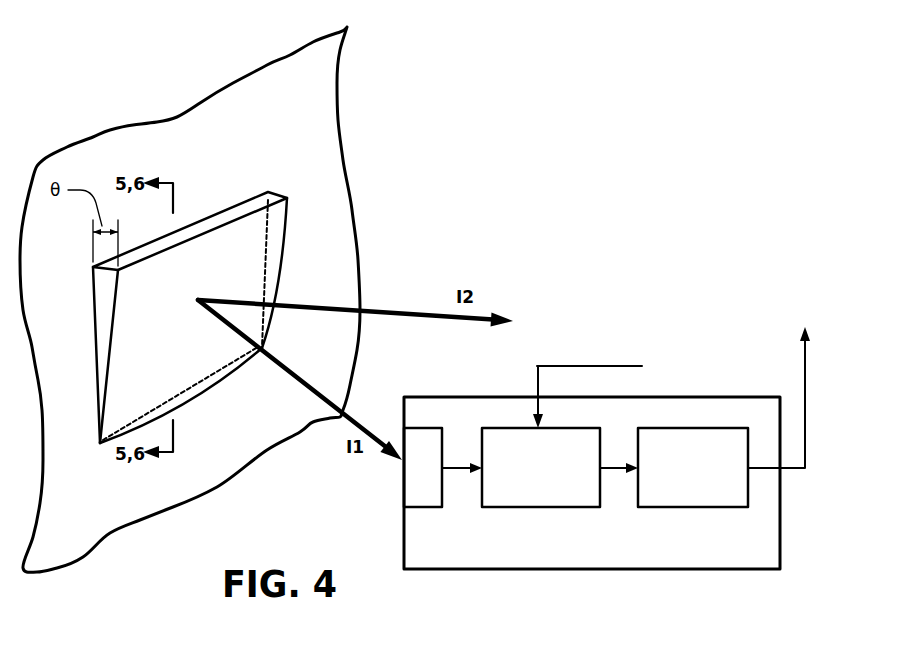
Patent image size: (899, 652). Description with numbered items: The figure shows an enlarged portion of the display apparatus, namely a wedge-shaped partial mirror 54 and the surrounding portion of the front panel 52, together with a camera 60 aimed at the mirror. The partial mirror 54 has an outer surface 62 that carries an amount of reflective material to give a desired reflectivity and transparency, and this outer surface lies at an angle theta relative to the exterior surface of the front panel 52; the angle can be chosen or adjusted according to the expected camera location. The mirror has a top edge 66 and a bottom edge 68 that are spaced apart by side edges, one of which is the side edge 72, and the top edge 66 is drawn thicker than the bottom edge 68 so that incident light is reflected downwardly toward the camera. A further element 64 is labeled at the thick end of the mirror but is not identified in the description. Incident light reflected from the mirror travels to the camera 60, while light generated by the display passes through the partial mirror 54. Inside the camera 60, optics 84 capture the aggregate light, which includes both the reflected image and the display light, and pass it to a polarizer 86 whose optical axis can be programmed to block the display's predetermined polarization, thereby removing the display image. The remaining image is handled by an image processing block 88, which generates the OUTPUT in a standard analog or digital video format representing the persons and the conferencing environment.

The front panel 52 is at (298, 166).
The partial mirror 54 is at (190, 299).
The outer surface 62 is at (113, 336).
The left (thick) end face of wedge 64 is at (94, 288).
The top edge 66 is at (243, 202).
The bottom edge 68 is at (204, 393).
The side edge 72 is at (288, 222).
The camera 60 is at (700, 551).
The optics 84 is at (420, 508).
The polarizer 86 is at (500, 507).
The image processing block 88 is at (727, 507).